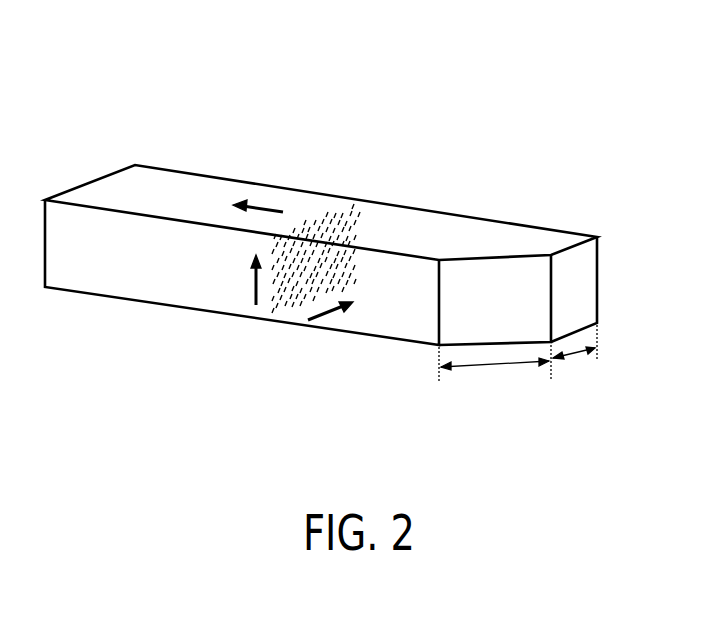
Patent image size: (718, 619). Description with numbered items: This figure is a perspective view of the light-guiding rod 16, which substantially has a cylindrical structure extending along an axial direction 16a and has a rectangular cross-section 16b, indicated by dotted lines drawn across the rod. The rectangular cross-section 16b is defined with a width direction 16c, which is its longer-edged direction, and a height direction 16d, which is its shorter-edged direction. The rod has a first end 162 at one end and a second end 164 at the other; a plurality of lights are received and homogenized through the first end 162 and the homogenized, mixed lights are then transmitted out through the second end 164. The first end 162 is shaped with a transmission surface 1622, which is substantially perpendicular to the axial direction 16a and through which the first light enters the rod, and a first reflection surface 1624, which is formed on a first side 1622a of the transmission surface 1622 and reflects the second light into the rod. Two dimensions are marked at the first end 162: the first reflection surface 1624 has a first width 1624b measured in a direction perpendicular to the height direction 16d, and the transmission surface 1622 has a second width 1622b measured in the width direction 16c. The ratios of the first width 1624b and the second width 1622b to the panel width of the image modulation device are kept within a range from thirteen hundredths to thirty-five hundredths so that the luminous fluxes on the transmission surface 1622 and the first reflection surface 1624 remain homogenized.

The light-guiding rod 16 is at (497, 71).
The first end 162 is at (450, 228).
The transmission surface 1622 is at (600, 273).
The first side 1622a is at (552, 305).
The second width 1622b is at (580, 355).
The first reflection surface 1624 is at (503, 287).
The first width 1624b is at (495, 369).
The second end 164 is at (110, 195).
The axial direction 16a is at (272, 212).
The rectangular cross-section 16b is at (367, 233).
The width direction 16c is at (329, 316).
The height direction 16d is at (252, 288).